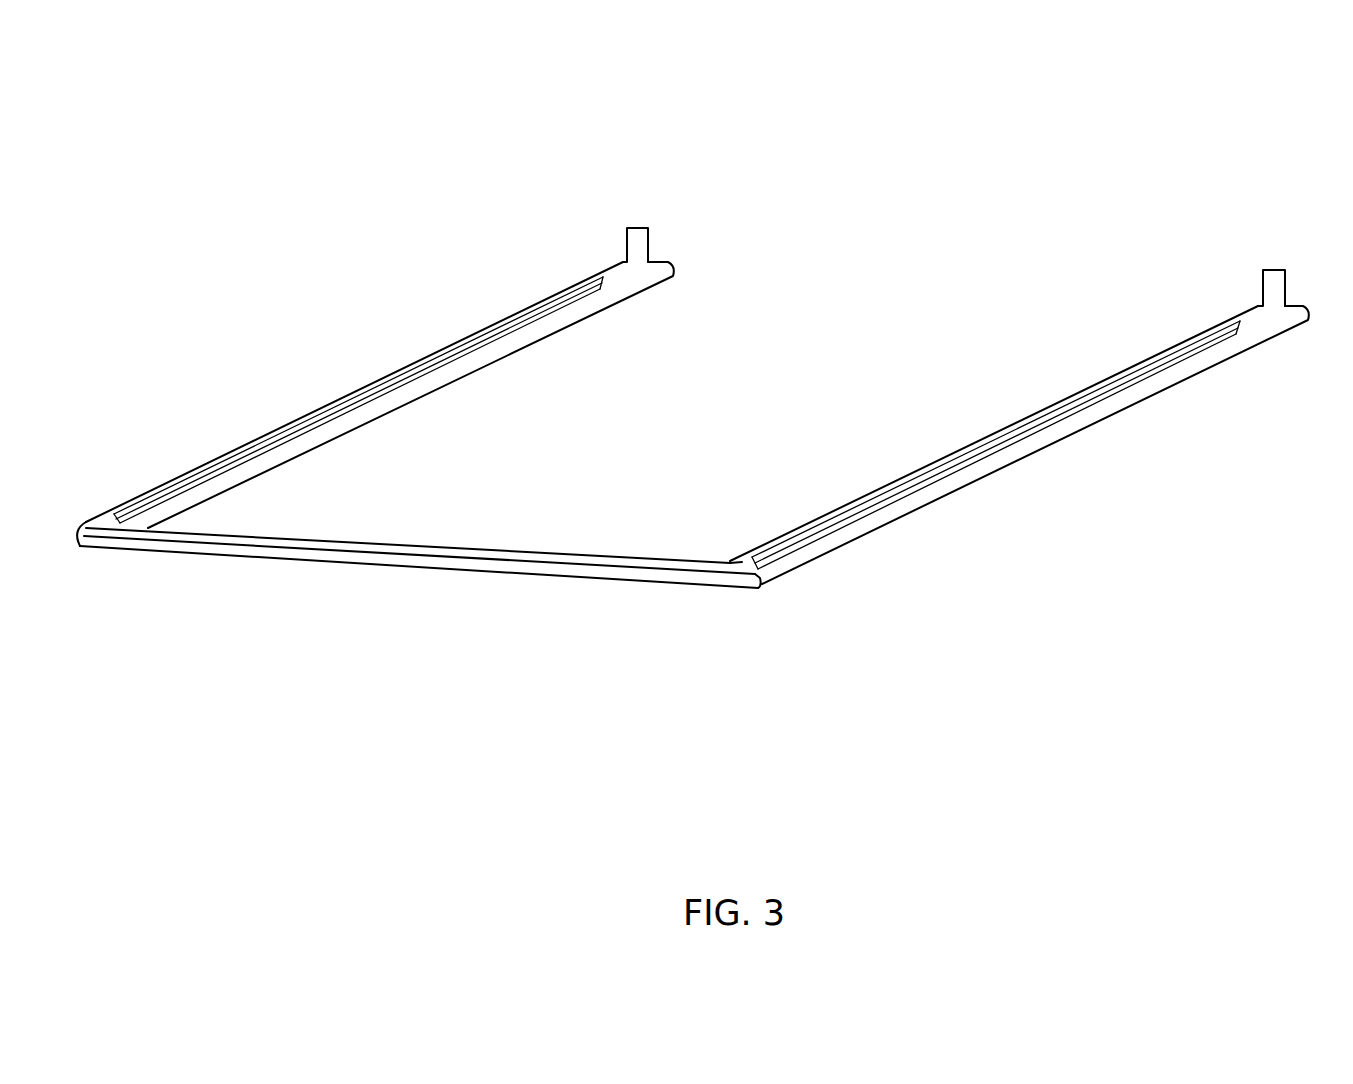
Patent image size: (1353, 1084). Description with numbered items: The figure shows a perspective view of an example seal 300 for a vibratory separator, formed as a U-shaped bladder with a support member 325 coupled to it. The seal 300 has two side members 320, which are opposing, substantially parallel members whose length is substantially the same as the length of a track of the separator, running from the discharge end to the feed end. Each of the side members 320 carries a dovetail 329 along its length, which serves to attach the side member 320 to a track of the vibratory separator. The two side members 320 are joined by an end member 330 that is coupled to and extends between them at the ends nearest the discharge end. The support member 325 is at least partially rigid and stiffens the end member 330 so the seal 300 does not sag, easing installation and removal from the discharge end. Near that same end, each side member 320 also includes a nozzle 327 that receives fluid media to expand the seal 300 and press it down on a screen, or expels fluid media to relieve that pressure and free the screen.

The seal 300 is at (350, 152).
The side members 320 is at (607, 302).
The support member 325 is at (661, 586).
The nozzle 327 is at (637, 228).
The dovetail 329 is at (536, 298).
The end member 330 is at (462, 572).